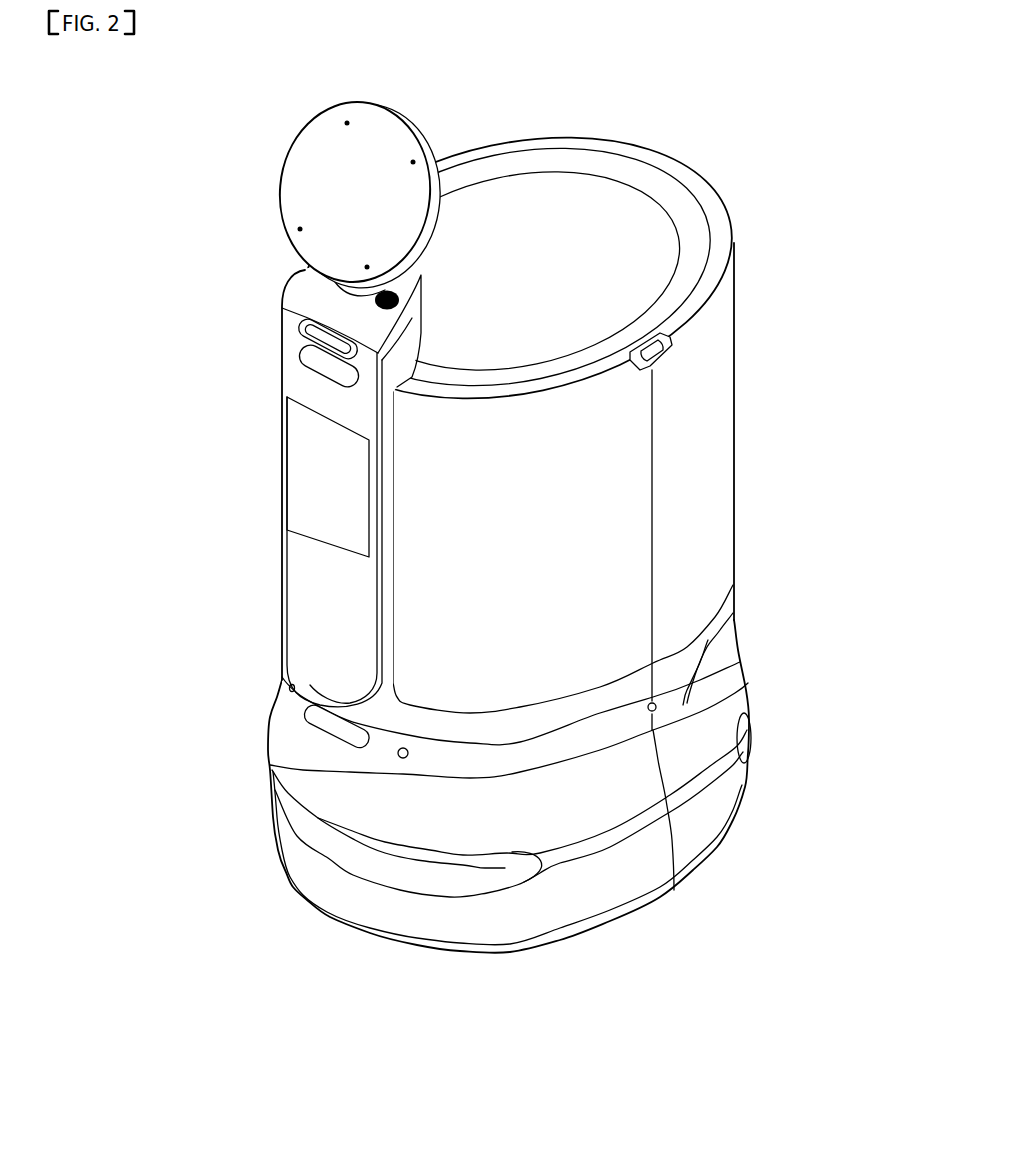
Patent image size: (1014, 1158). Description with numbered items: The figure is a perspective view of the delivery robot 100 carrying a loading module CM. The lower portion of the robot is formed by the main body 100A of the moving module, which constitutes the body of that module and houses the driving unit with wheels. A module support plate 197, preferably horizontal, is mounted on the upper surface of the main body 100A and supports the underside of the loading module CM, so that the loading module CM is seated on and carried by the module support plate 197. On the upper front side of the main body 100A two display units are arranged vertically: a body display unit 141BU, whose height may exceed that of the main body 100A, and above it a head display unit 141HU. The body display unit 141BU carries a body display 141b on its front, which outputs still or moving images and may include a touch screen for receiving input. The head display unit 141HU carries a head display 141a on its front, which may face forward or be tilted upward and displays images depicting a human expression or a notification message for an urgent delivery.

The head display unit 141HU is at (270, 129).
The head display 141a is at (300, 187).
The body display unit 141BU is at (268, 464).
The body display 141b is at (302, 497).
The loading module CM is at (694, 150).
The module support plate 197 is at (676, 663).
The main body 100A is at (713, 829).
The delivery robot 100 is at (888, 967).